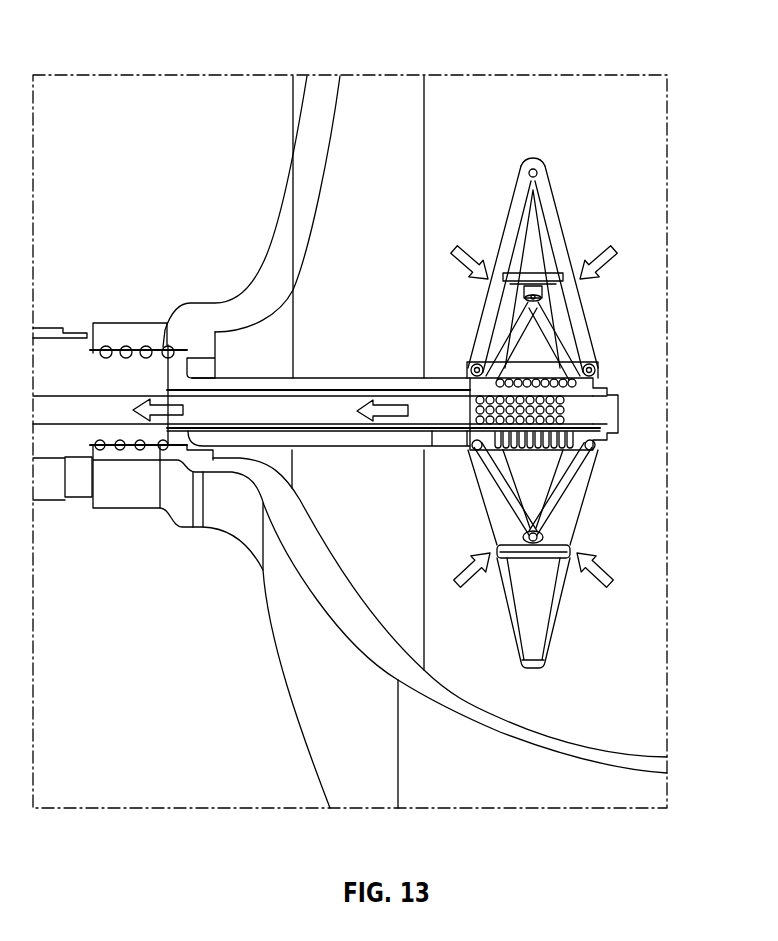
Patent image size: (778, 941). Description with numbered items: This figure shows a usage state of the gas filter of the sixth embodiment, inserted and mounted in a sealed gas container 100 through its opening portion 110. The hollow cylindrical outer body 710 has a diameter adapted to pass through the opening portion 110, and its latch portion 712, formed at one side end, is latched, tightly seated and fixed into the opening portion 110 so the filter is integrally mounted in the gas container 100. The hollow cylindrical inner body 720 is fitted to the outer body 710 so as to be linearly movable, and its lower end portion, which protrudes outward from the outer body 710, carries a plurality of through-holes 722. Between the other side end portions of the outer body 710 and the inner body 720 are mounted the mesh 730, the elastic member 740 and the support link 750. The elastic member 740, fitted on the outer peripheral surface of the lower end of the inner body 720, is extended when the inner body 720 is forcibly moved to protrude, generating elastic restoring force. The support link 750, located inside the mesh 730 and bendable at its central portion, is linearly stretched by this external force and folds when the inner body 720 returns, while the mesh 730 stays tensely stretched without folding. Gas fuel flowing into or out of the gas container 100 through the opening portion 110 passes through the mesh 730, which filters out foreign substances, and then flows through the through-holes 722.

The gas container 100 is at (286, 139).
The opening portion 110 is at (107, 322).
The latch portion 712 is at (165, 343).
The outer body 710 is at (400, 383).
The inner body 720 is at (326, 393).
The through-holes 722 is at (568, 410).
The mesh 730 is at (583, 314).
The elastic member 740 is at (556, 444).
The support link 750 is at (546, 222).